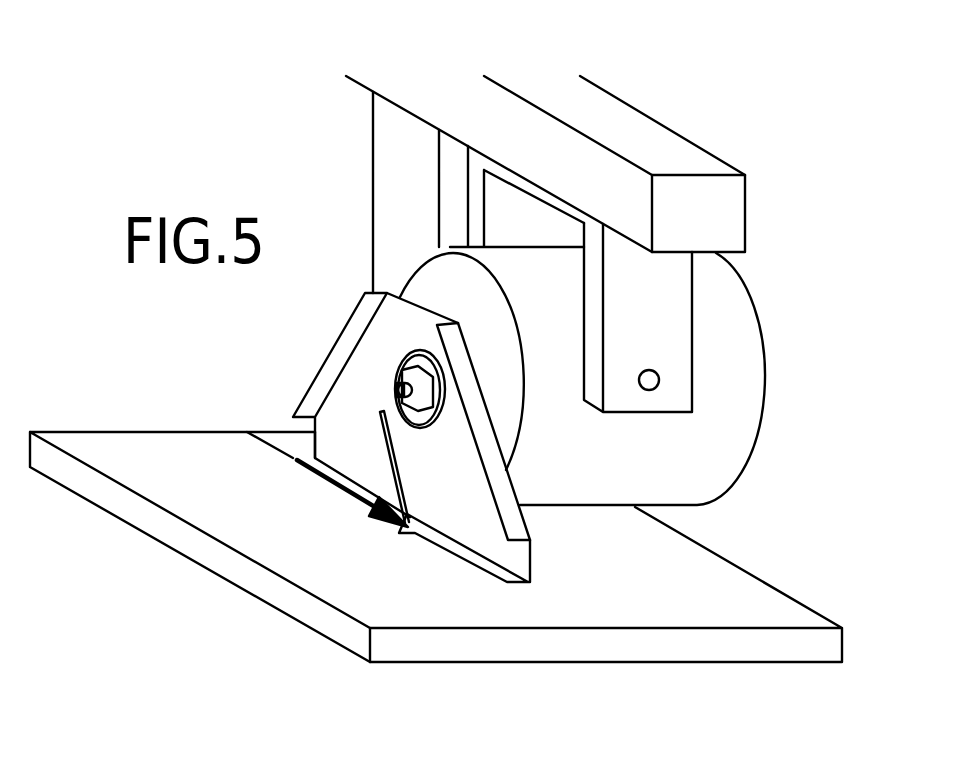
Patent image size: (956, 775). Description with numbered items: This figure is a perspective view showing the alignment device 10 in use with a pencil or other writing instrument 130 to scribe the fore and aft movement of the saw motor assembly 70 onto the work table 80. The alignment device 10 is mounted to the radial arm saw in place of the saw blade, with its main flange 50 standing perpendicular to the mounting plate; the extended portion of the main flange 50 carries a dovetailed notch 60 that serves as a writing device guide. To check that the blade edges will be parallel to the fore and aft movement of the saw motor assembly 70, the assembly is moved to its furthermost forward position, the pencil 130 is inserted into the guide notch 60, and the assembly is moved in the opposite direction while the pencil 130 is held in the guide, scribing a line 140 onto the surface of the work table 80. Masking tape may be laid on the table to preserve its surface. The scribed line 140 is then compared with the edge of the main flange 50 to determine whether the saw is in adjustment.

The alignment device 10 is at (520, 558).
The main flange 50 is at (458, 548).
The dovetailed notch 60 is at (390, 528).
The saw motor assembly 70 is at (725, 427).
The work table 80 is at (176, 450).
The pencil or other writing instrument 130 is at (380, 427).
The scribed line 140 is at (275, 443).